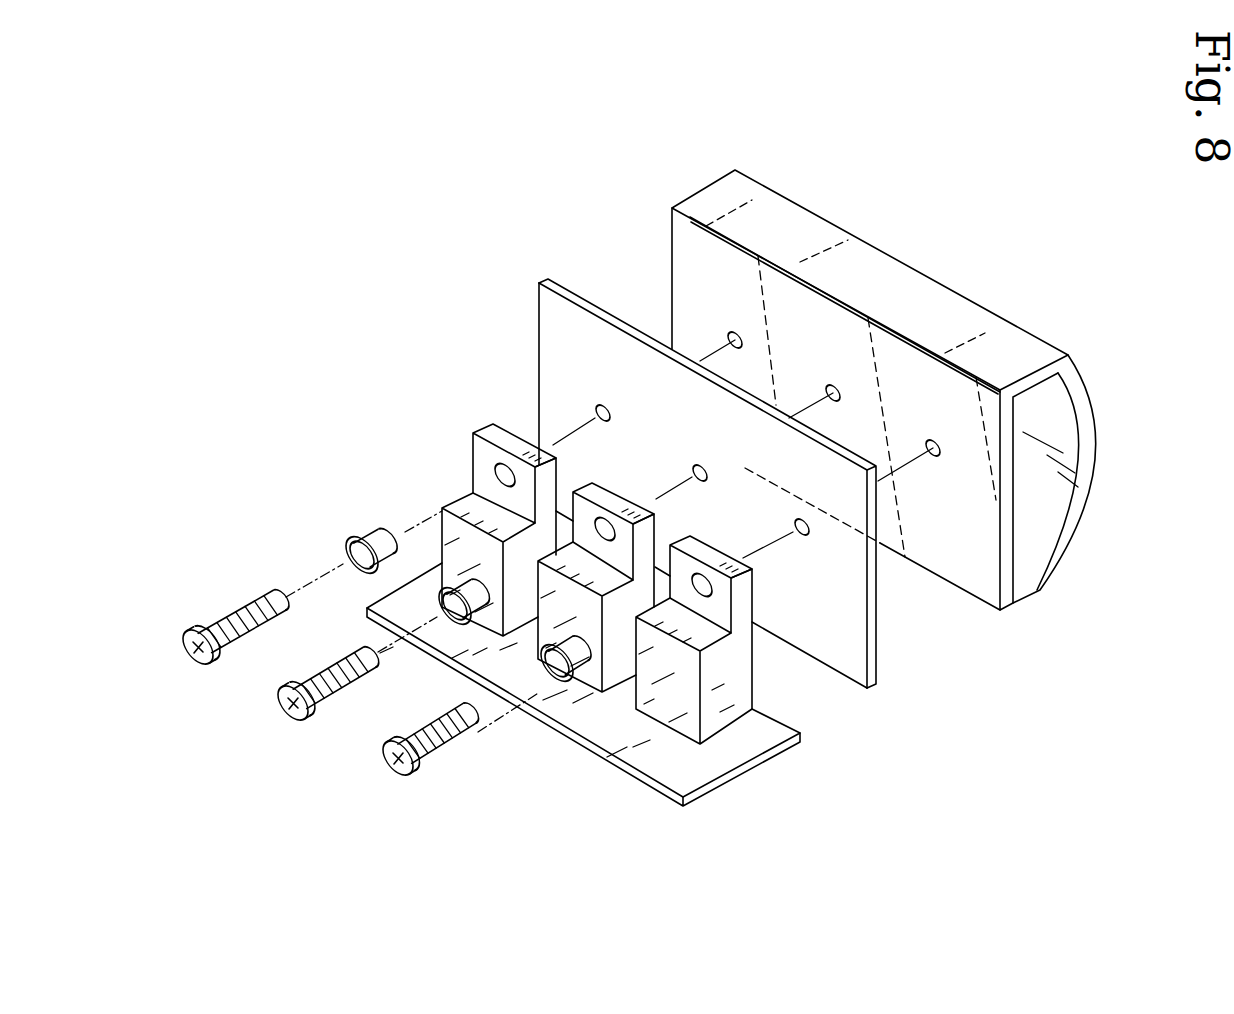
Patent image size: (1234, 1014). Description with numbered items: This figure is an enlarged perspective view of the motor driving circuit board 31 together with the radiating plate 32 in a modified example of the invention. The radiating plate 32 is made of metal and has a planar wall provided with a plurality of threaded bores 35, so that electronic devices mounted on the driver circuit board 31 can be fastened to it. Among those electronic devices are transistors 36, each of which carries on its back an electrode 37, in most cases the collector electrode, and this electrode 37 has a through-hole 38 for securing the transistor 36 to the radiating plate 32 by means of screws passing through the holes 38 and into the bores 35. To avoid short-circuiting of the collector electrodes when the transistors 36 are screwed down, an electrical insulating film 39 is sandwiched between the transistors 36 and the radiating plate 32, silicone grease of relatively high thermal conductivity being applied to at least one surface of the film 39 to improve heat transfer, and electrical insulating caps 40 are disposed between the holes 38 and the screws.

The driver circuit board 31 is at (745, 747).
The radiating plate 32 is at (1013, 338).
The threaded bores 35 is at (735, 333).
The transistor 36 is at (440, 533).
The electrode 37 is at (503, 430).
The through-hole 38 is at (495, 472).
The electrical insulating film 39 is at (855, 618).
The electrical insulating caps 40 is at (371, 536).